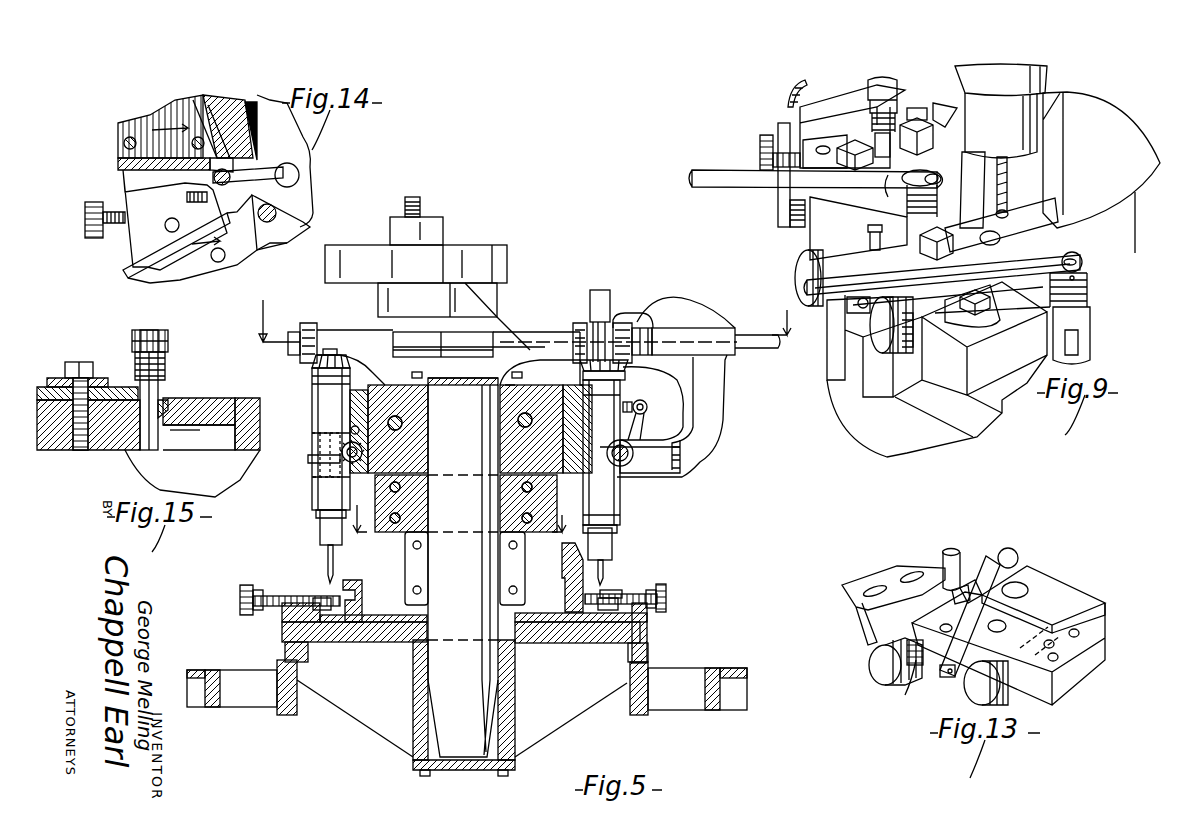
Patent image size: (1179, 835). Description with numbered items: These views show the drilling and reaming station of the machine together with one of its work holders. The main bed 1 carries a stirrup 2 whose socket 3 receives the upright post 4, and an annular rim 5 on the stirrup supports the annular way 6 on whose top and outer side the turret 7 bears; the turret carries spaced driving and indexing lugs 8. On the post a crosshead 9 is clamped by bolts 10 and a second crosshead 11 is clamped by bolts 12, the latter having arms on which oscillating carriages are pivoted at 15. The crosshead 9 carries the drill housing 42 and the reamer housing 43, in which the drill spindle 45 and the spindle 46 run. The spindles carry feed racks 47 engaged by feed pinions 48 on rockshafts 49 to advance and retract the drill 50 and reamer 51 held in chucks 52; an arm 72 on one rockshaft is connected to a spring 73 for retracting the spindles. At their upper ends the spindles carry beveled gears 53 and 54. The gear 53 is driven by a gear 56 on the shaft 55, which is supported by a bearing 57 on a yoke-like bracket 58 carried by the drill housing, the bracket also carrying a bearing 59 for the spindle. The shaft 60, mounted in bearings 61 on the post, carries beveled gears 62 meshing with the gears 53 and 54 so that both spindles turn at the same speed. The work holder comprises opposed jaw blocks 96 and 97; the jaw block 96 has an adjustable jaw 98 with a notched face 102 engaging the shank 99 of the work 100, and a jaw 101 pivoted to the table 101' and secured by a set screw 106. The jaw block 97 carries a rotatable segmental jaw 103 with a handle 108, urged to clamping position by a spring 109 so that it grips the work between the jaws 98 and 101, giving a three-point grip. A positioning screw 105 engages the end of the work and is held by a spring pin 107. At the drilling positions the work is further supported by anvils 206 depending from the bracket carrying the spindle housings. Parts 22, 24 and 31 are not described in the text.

In FIG. 5, the main bed 1 is at (642, 716).
In FIG. 5, the stirrup 2 is at (345, 698).
In FIG. 5, the socket 3 is at (413, 745).
In FIG. 5, the upright post 4 is at (525, 668).
In FIG. 9, the upright post 4 is at (782, 314).
In FIG. 5, the annular rim 5 is at (648, 651).
In FIG. 5, the annular way 6 is at (642, 632).
In FIG. 5, the turret 7 is at (648, 618).
In FIG. 9, the turret 7 is at (928, 408).
In FIG. 5, the driving and indexing lugs 8 is at (282, 628).
In FIG. 9, the driving and indexing lugs 8 is at (860, 392).
In FIG. 5, the crosshead 9 is at (545, 380).
In FIG. 5, the bolts 10 is at (395, 415).
In FIG. 5, the crosshead 11 is at (461, 511).
In FIG. 5, the bolts 12 is at (522, 518).
In FIG. 14, the pivot 15 is at (172, 189).
In FIG. 5, the head connecting piece 22 is at (518, 300).
In FIG. 5, the head 24 is at (365, 250).
In FIG. 5, the guide plate 31 is at (526, 550).
In FIG. 5, the drill housing 42 is at (620, 493).
In FIG. 5, the reamer housing 43 is at (312, 490).
In FIG. 9, the reamer housing 43 is at (1048, 73).
In FIG. 5, the drill spindle 45 is at (595, 335).
In FIG. 5, the spindle 46 is at (310, 460).
In FIG. 5, the feed racks 47 is at (316, 450).
In FIG. 5, the feed pinions 48 is at (340, 440).
In FIG. 5, the rockshafts 49 is at (357, 425).
In FIG. 5, the drill 50 is at (603, 568).
In FIG. 5, the reamer 51 is at (328, 570).
In FIG. 9, the reamer 51 is at (997, 173).
In FIG. 5, the chucks 52 is at (322, 545).
In FIG. 9, the chucks 52 is at (968, 112).
In FIG. 5, the beveled gear 53 is at (630, 365).
In FIG. 5, the beveled gear 54 is at (312, 370).
In FIG. 5, the shaft 55 is at (752, 336).
In FIG. 5, the gear 56 is at (628, 330).
In FIG. 5, the bearing 57 is at (700, 330).
In FIG. 5, the yoke-like bracket 58 is at (720, 376).
In FIG. 5, the bearing 59 is at (603, 290).
In FIG. 5, the shaft 60 is at (435, 340).
In FIG. 5, the bearings 61 is at (362, 335).
In FIG. 5, the beveled gears 62 is at (300, 322).
In FIG. 5, the arm 72 is at (641, 400).
In FIG. 5, the spring 73 is at (623, 407).
In FIG. 5, the jaw block 96 is at (290, 595).
In FIG. 9, the jaw block 96 is at (940, 370).
In FIG. 14, the jaw block 96 is at (218, 270).
In FIG. 15, the jaw block 96 is at (248, 398).
In FIG. 13, the jaw block 96 is at (1068, 672).
In FIG. 9, the jaw block 97 is at (1000, 375).
In FIG. 14, the jaw block 97 is at (120, 162).
In FIG. 15, the jaw block 97 is at (122, 395).
In FIG. 13, the jaw block 97 is at (900, 566).
In FIG. 9, the adjustable jaw 98 is at (895, 262).
In FIG. 14, the adjustable jaw 98 is at (173, 270).
In FIG. 15, the adjustable jaw 98 is at (212, 398).
In FIG. 13, the adjustable jaw 98 is at (958, 628).
In FIG. 5, the shank 99 is at (615, 585).
In FIG. 14, the shank 99 is at (213, 190).
In FIG. 15, the shank 99 is at (172, 428).
In FIG. 13, the shank 99 is at (968, 590).
In FIG. 5, the work 100 is at (330, 612).
In FIG. 9, the work 100 is at (978, 210).
In FIG. 14, the work 100 is at (299, 175).
In FIG. 13, the work 100 is at (1019, 553).
In FIG. 9, the jaw 101 is at (1024, 225).
In FIG. 14, the jaw 101 is at (253, 174).
In FIG. 13, the jaw 101 is at (1044, 595).
In FIG. 9, the table 101' is at (1043, 210).
In FIG. 14, the table 101' is at (291, 231).
In FIG. 13, the table 101' is at (1041, 568).
In FIG. 15, the notched face 102 is at (166, 404).
In FIG. 13, the notched face 102 is at (952, 600).
In FIG. 9, the segmental jaw 103 is at (940, 165).
In FIG. 14, the segmental jaw 103 is at (245, 170).
In FIG. 15, the segmental jaw 103 is at (152, 452).
In FIG. 13, the segmental jaw 103 is at (951, 549).
In FIG. 5, the positioning screw 105 is at (248, 598).
In FIG. 9, the positioning screw 105 is at (795, 266).
In FIG. 14, the positioning screw 105 is at (90, 202).
In FIG. 13, the positioning screw 105 is at (878, 670).
In FIG. 9, the set screw 106 is at (778, 210).
In FIG. 13, the set screw 106 is at (968, 692).
In FIG. 5, the spring pin 107 is at (258, 608).
In FIG. 9, the spring pin 107 is at (792, 228).
In FIG. 13, the spring pin 107 is at (905, 695).
In FIG. 9, the handle 108 is at (735, 170).
In FIG. 15, the handle 108 is at (137, 330).
In FIG. 9, the spring 109 is at (1092, 300).
In FIG. 15, the spring 109 is at (168, 368).
In FIG. 5, the anvil 206 is at (340, 575).
In FIG. 9, the anvil 206 is at (1128, 235).